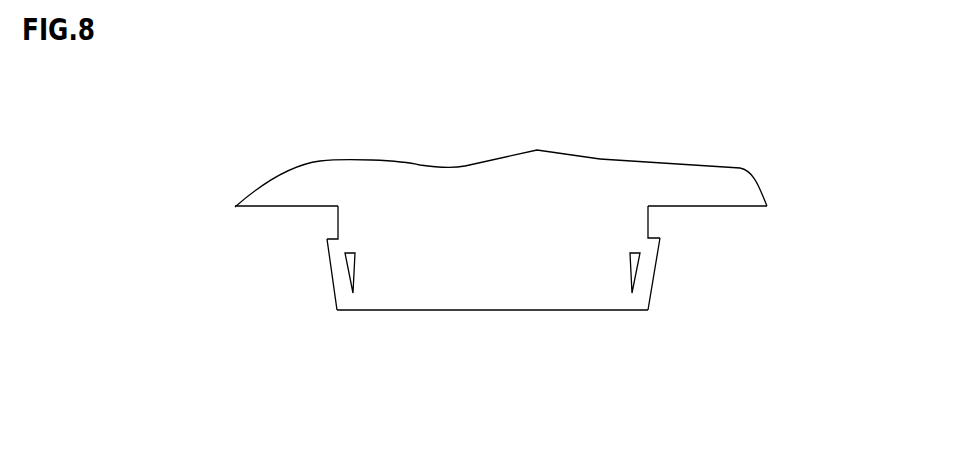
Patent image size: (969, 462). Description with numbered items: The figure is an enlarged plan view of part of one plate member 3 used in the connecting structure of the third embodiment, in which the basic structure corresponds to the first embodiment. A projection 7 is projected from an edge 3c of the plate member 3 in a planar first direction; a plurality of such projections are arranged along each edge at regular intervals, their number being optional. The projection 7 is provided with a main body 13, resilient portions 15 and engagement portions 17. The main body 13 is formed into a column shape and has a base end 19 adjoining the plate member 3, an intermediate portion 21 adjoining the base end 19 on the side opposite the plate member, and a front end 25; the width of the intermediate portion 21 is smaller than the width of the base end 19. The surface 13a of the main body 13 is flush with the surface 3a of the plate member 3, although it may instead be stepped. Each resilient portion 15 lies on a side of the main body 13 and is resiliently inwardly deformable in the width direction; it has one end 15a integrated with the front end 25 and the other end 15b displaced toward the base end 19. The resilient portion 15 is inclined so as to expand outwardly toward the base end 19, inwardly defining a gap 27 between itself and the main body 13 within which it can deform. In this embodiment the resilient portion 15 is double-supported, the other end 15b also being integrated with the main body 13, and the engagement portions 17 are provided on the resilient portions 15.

The plate member 3 is at (563, 148).
The surface of the plate member 3a is at (503, 164).
The edge of the plate member 3c is at (743, 207).
The projection 7 is at (444, 313).
The main body 13 is at (502, 278).
The surface of the main body 13a is at (530, 293).
The resilient portion 15 is at (338, 270).
The one end of the resilient portion 15a is at (345, 311).
The other end of the resilient portion 15b is at (337, 237).
The engagement portion 17 is at (336, 254).
The base end 19 is at (337, 223).
The intermediate portion 21 is at (375, 253).
The front end 25 is at (408, 311).
The gap 27 is at (350, 253).